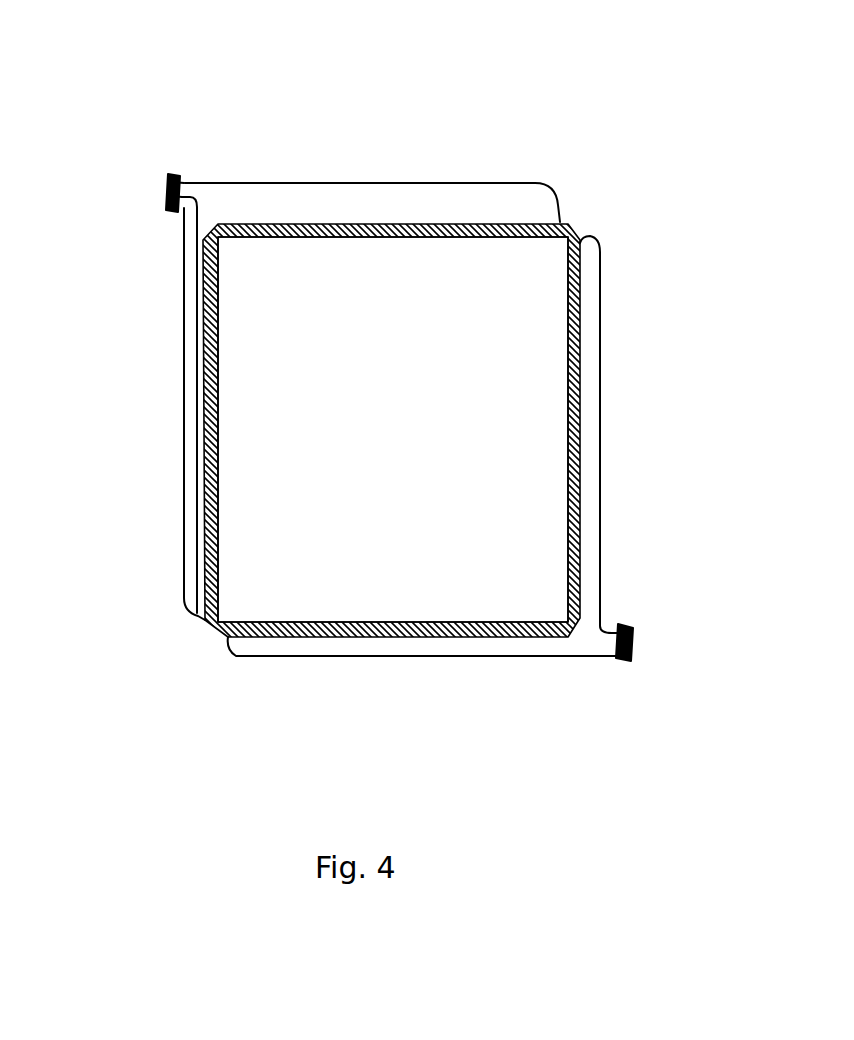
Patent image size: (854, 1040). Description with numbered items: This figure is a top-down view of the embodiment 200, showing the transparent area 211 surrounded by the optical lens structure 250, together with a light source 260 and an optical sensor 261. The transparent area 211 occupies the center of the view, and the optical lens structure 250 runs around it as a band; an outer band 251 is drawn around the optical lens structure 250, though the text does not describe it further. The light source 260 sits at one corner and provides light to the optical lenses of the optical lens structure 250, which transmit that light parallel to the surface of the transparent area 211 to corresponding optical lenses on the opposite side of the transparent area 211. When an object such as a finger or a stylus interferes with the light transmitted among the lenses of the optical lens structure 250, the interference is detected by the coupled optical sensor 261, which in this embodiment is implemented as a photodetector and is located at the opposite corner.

The embodiment 200 is at (370, 39).
The transparent area 211 is at (398, 421).
The optical lens structure 250 is at (378, 214).
The outer frame band 251 is at (466, 181).
The light source 260 is at (149, 205).
The optical sensor 261 is at (652, 652).